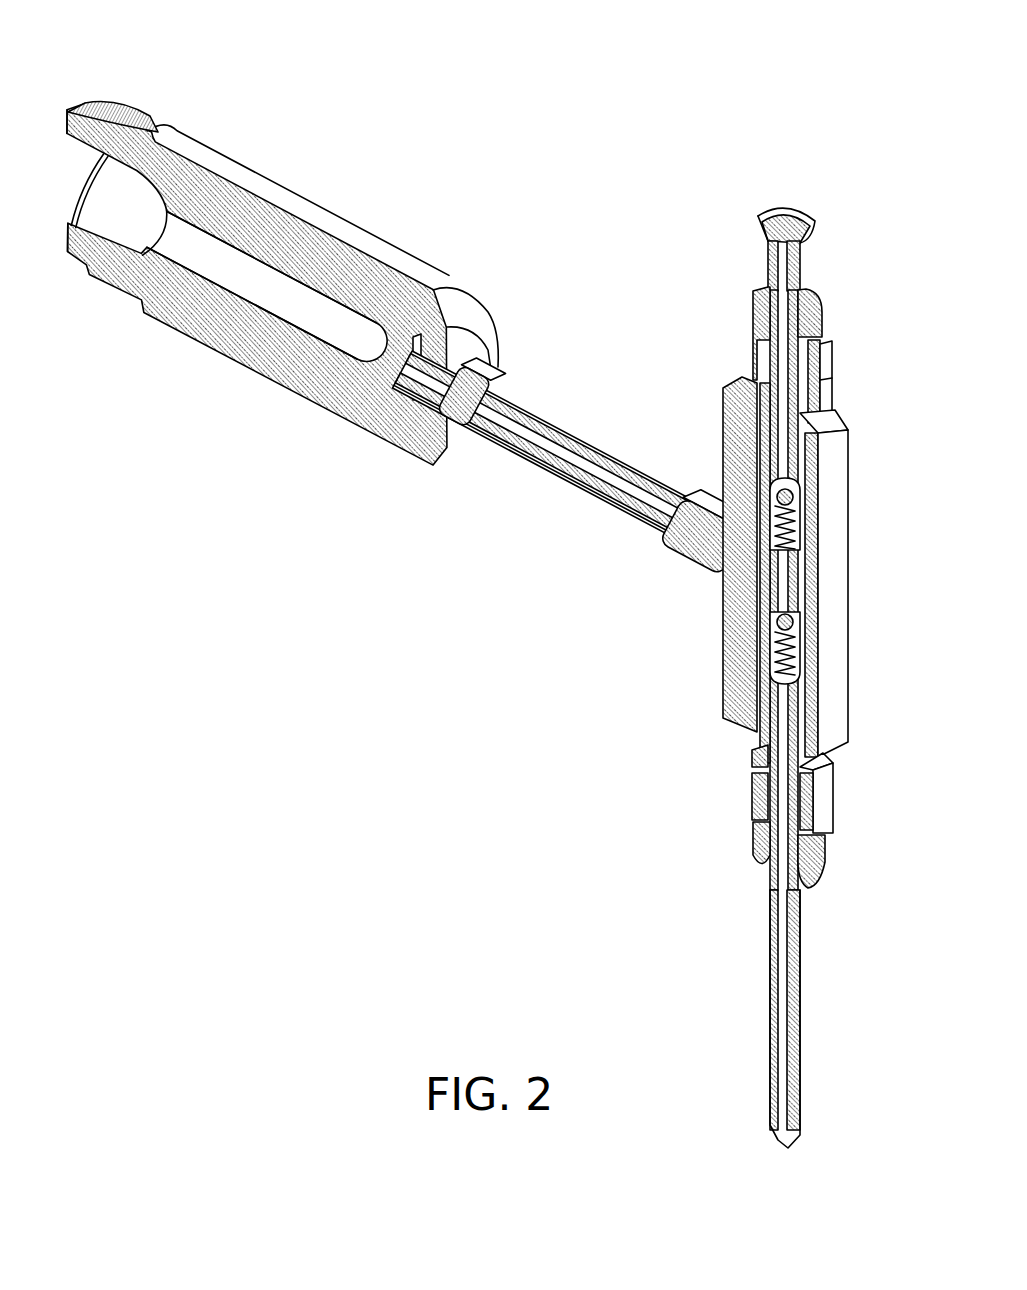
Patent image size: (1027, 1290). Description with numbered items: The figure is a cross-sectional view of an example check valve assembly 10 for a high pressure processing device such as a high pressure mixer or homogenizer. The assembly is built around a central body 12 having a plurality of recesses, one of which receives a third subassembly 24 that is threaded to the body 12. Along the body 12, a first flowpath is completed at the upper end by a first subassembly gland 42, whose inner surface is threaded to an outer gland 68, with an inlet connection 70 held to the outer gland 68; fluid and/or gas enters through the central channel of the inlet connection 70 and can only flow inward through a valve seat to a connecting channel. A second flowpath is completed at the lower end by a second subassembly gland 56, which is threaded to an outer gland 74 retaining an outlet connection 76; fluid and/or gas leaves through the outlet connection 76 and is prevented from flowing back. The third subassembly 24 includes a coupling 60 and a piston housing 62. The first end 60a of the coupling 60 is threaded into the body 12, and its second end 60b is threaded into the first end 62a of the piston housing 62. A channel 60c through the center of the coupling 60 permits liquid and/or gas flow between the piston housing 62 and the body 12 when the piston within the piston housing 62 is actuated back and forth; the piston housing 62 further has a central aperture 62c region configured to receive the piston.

The check valve assembly 10 is at (471, 588).
The central body 12 is at (832, 572).
The third subassembly 24 is at (742, 392).
The first subassembly gland 42 is at (822, 392).
The second subassembly gland 56 is at (822, 800).
The coupling 60 is at (573, 471).
The first end of coupling 60a is at (706, 530).
The second end of coupling 60b is at (471, 392).
The channel 60c is at (561, 465).
The piston housing 62 is at (259, 248).
The first end of piston housing 62a is at (468, 308).
The tube bore 62c is at (225, 263).
The outer gland 68 is at (812, 327).
The inlet connection 70 is at (816, 241).
The outer gland 74 is at (823, 862).
The outlet connection 76 is at (800, 1030).